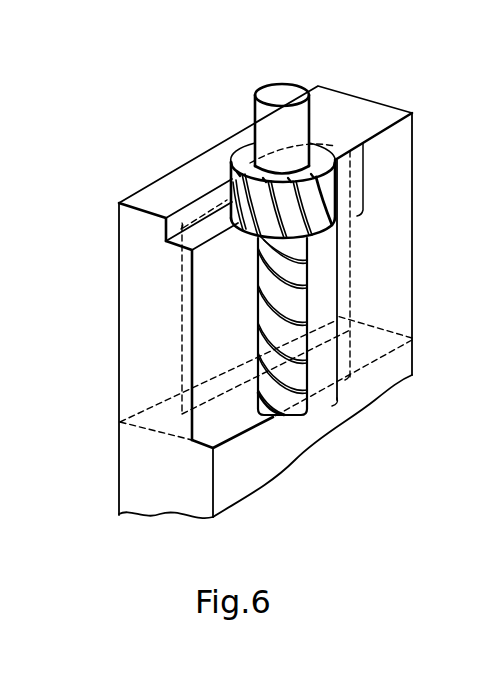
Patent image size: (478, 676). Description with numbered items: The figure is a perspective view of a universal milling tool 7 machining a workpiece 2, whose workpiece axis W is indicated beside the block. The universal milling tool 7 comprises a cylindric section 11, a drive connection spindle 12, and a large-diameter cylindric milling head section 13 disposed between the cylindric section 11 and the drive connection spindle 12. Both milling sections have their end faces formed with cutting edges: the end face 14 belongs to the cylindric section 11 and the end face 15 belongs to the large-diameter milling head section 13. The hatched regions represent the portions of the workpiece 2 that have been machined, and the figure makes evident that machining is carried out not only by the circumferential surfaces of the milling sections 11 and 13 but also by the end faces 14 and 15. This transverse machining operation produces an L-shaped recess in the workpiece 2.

The workpiece 2 is at (135, 236).
The universal milling tool 7 is at (287, 294).
The cylindric section 11 is at (340, 315).
The drive connection spindle 12 is at (295, 123).
The large-diameter cylindric milling head section 13 is at (365, 173).
The end face 14 is at (286, 425).
The end face 15 is at (237, 243).
The workpiece axis W is at (477, 391).